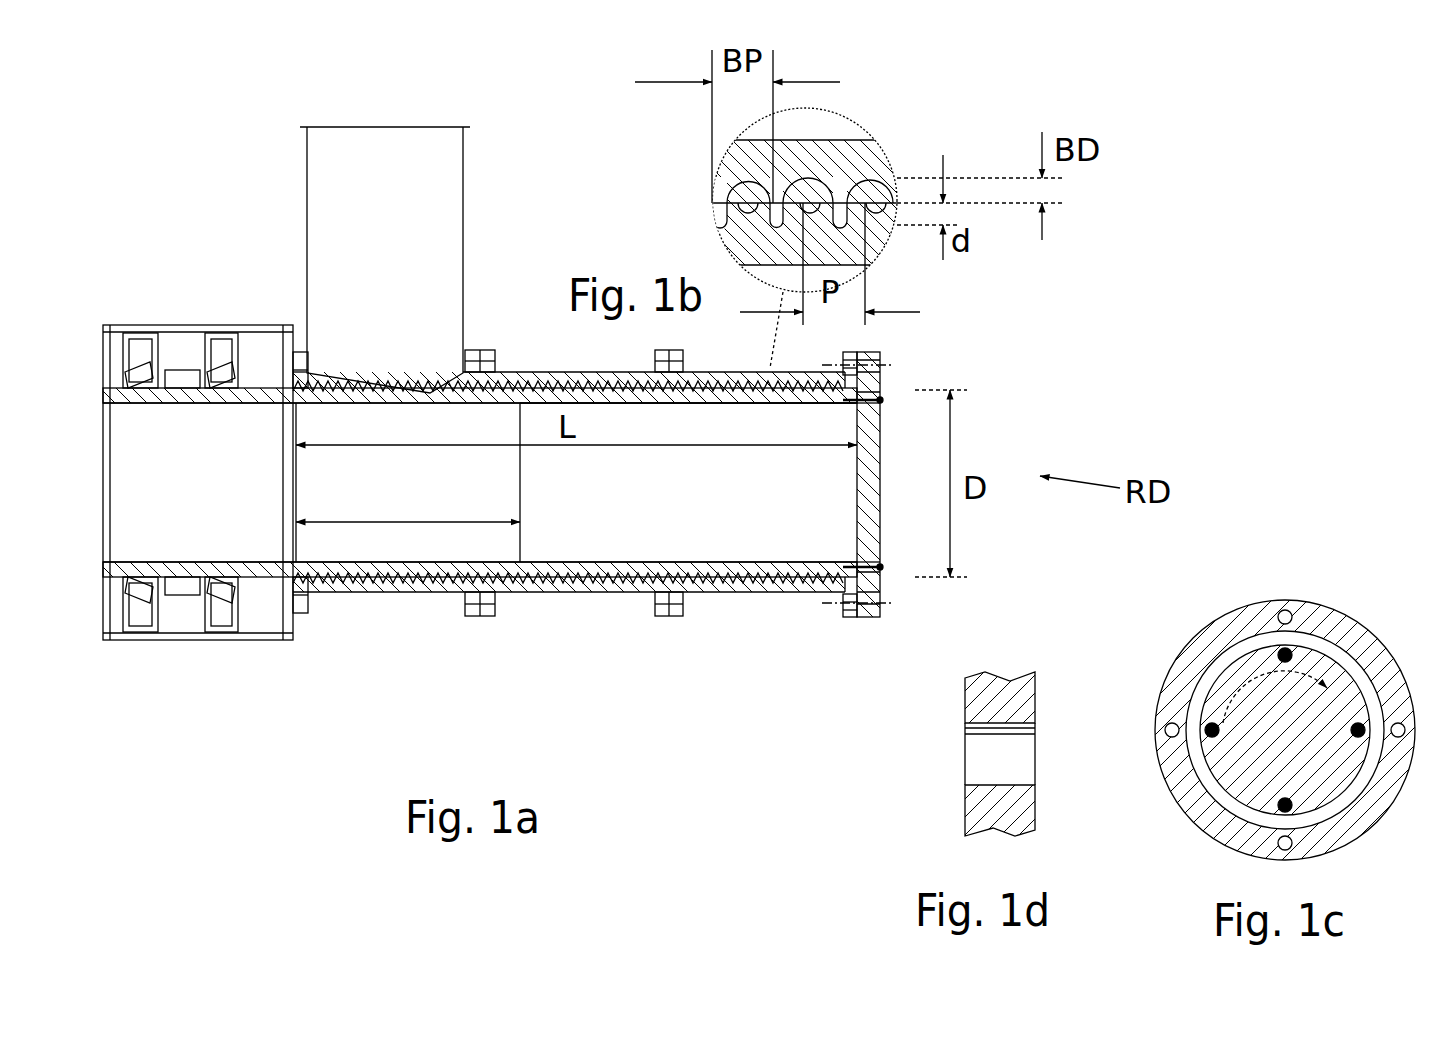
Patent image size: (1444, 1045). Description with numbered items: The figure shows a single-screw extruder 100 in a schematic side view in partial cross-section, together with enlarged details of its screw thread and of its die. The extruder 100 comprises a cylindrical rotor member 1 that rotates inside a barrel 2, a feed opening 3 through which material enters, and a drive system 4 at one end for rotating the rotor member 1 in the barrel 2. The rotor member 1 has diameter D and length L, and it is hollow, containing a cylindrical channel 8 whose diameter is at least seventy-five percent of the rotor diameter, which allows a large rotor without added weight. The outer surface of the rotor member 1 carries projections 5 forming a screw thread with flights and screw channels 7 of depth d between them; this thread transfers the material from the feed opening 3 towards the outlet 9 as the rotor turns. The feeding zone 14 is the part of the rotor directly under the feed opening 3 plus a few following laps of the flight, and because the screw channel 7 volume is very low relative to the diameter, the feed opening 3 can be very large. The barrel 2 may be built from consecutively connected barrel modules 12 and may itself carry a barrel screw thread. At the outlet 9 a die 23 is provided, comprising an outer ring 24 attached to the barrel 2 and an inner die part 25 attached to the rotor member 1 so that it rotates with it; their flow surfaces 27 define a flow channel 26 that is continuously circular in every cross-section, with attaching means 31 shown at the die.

In FIG. 1A, the rotor member 1 is at (662, 567).
In FIG. 1B, the rotor member 1 is at (738, 246).
In FIG. 1A, the barrel 2 is at (624, 592).
In FIG. 1B, the barrel 2 is at (730, 173).
In FIG. 1A, the feed opening 3 is at (340, 336).
In FIG. 1A, the drive system 4 is at (181, 316).
In FIG. 1A, the projection or cavity 5 is at (395, 636).
In FIG. 1B, the projection or cavity 5 is at (917, 149).
In FIG. 1B, the screw channel 7 is at (843, 217).
In FIG. 1A, the channel 8 is at (583, 510).
In FIG. 1A, the outlet 9 is at (1032, 406).
In FIG. 1A, the barrel module 12 is at (427, 628).
In FIG. 1A, the feeding zone 14 is at (408, 501).
In FIG. 1A, the die 23 is at (955, 371).
In FIG. 1A, the outer ring 24 is at (872, 592).
In FIG. 1C, the outer ring 24 is at (1190, 664).
In FIG. 1D, the outer ring 24 is at (995, 702).
In FIG. 1A, the inner die part 25 is at (866, 496).
In FIG. 1C, the inner die part 25 is at (1289, 748).
In FIG. 1D, the inner die part 25 is at (978, 821).
In FIG. 1A, the flow channel 26 is at (882, 393).
In FIG. 1C, the flow channel 26 is at (1240, 650).
In FIG. 1D, the flow surface 27 is at (985, 729).
In FIG. 1A, the attaching means 31 is at (852, 402).
In FIG. 1C, the attaching means 31 is at (1292, 653).
In FIG. 1A, the extruder 100 is at (282, 732).